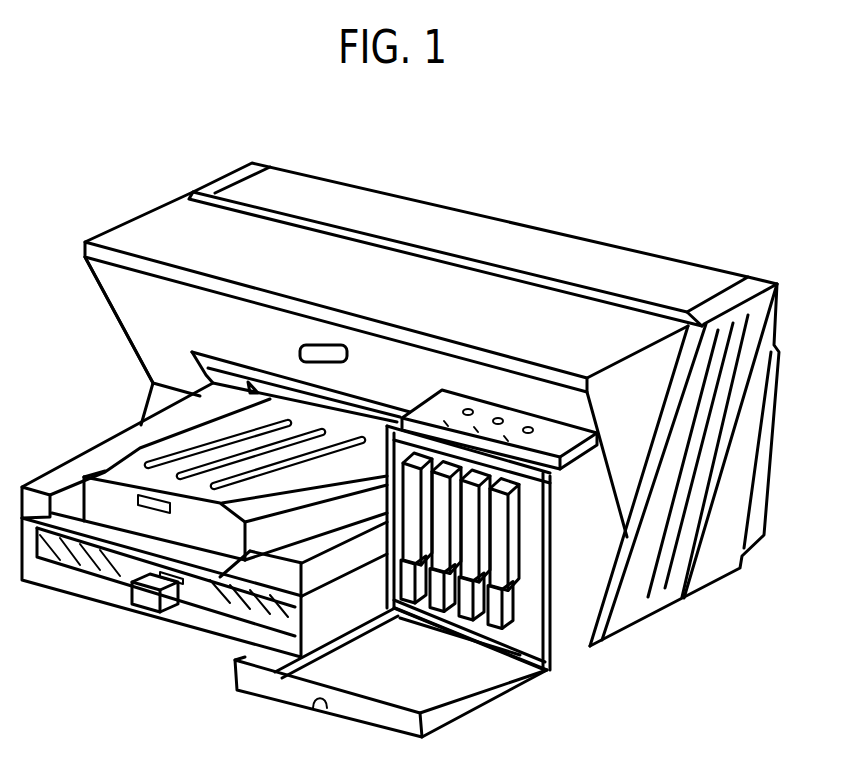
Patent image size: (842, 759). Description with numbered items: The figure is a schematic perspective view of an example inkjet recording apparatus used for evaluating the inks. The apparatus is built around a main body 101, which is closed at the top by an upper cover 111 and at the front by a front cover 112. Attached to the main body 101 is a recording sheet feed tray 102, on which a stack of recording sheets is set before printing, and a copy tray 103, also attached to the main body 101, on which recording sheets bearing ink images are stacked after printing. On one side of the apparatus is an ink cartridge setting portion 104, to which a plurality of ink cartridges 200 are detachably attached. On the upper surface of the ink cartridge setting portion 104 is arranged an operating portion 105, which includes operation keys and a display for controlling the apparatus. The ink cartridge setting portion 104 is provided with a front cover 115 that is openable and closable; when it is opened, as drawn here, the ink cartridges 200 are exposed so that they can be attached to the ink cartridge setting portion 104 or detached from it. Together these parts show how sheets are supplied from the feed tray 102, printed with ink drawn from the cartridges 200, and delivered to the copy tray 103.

The main body 101 is at (498, 176).
The upper cover 111 is at (356, 181).
The front cover 112 is at (127, 320).
The operating portion 105 is at (547, 433).
The ink cartridge setting portion 104 is at (568, 636).
The ink cartridges 200 is at (465, 613).
The front cover 115 is at (242, 680).
The recording sheet feed tray 102 is at (202, 620).
The copy tray 103 is at (90, 493).